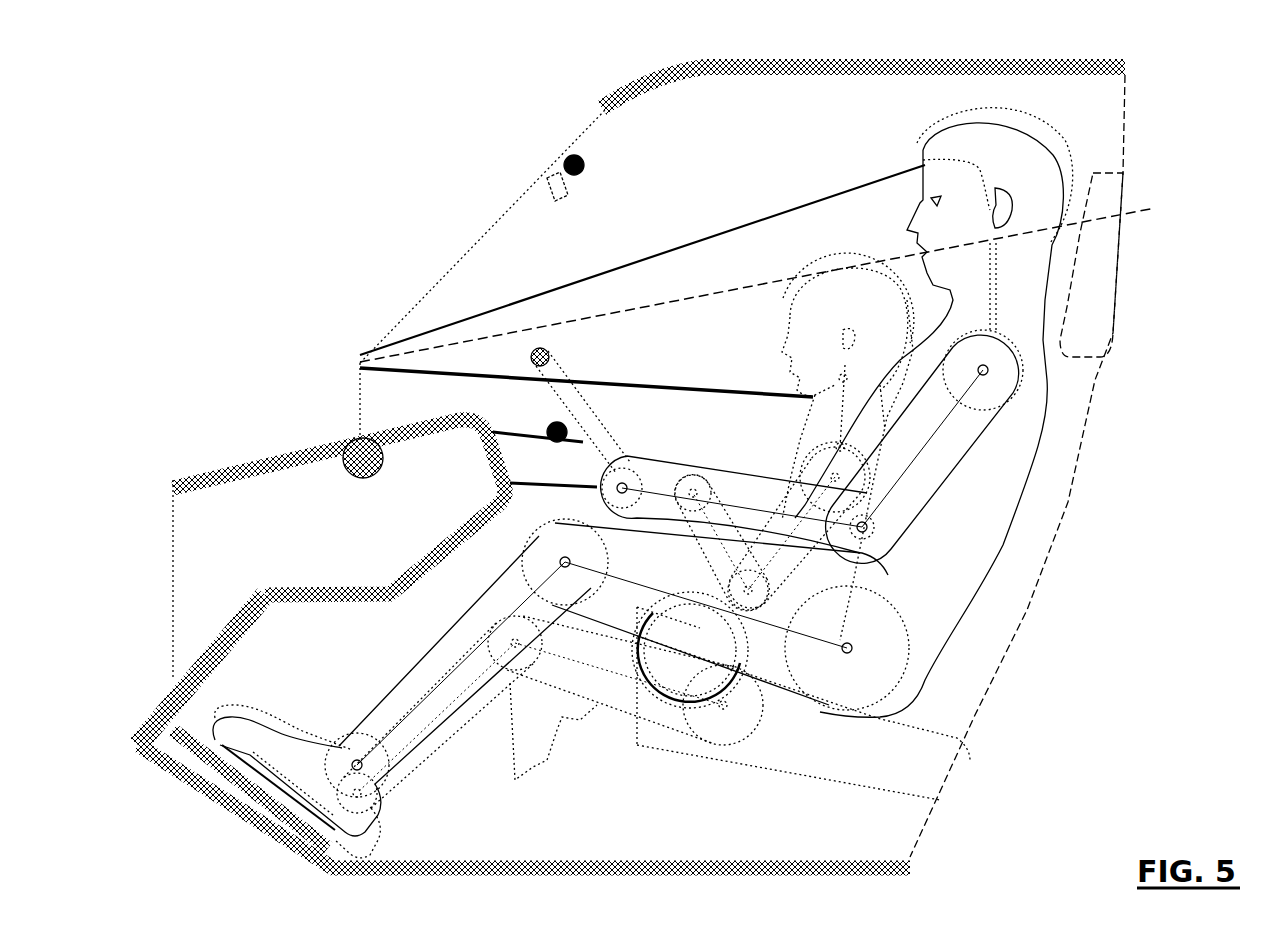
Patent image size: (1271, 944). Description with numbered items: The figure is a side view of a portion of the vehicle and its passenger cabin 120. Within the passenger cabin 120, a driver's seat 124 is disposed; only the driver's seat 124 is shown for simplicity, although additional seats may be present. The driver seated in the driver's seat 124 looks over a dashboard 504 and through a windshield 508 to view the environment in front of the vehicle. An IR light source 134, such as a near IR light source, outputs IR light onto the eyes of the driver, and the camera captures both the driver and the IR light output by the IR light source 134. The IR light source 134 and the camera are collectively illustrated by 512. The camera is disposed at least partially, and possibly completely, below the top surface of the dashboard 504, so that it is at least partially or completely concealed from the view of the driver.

The passenger cabin 120 is at (716, 105).
The IR light source 134 is at (572, 155).
The windshield 508 is at (485, 230).
The dashboard 504 is at (443, 435).
The IR light source and camera 512 is at (355, 472).
The driver's seat 124 is at (1047, 507).